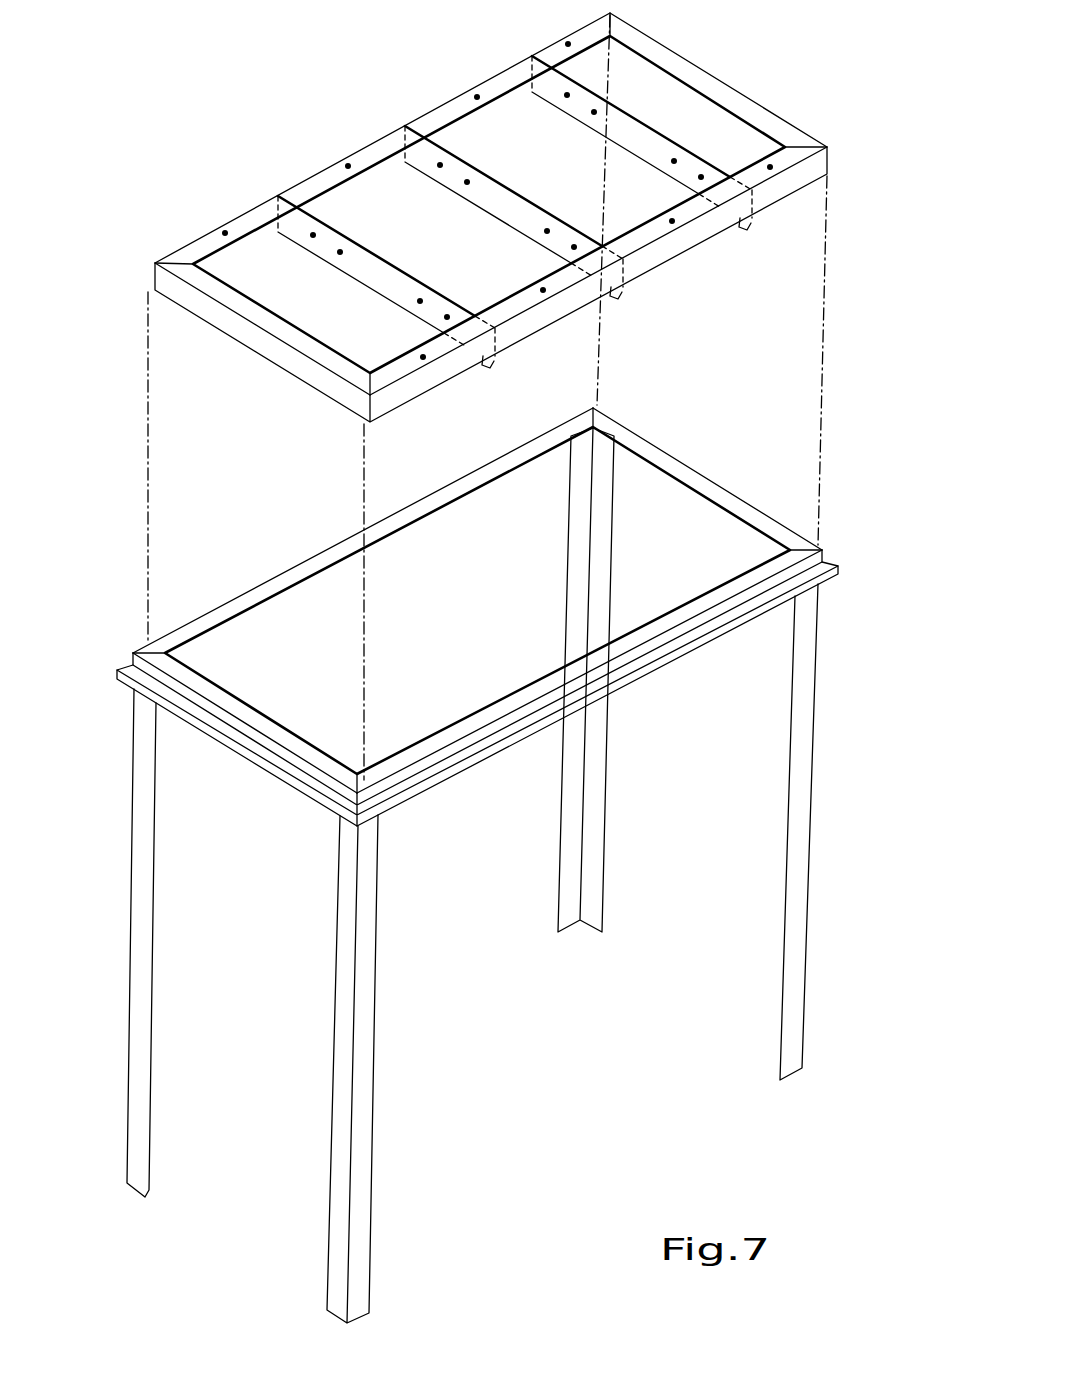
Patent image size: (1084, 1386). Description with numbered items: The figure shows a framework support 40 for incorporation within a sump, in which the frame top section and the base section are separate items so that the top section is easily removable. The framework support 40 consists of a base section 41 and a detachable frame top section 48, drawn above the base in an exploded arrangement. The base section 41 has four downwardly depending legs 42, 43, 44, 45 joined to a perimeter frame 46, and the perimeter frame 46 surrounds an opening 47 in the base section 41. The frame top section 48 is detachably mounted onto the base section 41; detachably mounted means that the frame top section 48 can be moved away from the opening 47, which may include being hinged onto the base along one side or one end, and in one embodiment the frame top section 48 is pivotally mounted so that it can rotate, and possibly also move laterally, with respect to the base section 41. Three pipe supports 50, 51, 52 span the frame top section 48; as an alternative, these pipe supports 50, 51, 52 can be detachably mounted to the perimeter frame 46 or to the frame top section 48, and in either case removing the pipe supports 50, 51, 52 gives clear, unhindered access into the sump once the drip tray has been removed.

The framework support 40 is at (868, 864).
The base section 41 is at (475, 786).
The leg 42 is at (790, 1017).
The leg 43 is at (592, 867).
The leg 44 is at (357, 1208).
The leg 45 is at (140, 1122).
The perimeter frame 46 is at (225, 717).
The opening 47 is at (518, 612).
The frame top section 48 is at (650, 260).
The pipe support 50 is at (302, 223).
The pipe support 51 is at (373, 152).
The pipe support 52 is at (665, 60).